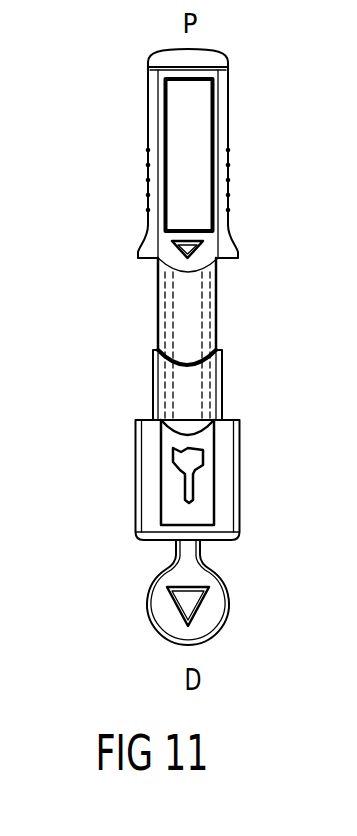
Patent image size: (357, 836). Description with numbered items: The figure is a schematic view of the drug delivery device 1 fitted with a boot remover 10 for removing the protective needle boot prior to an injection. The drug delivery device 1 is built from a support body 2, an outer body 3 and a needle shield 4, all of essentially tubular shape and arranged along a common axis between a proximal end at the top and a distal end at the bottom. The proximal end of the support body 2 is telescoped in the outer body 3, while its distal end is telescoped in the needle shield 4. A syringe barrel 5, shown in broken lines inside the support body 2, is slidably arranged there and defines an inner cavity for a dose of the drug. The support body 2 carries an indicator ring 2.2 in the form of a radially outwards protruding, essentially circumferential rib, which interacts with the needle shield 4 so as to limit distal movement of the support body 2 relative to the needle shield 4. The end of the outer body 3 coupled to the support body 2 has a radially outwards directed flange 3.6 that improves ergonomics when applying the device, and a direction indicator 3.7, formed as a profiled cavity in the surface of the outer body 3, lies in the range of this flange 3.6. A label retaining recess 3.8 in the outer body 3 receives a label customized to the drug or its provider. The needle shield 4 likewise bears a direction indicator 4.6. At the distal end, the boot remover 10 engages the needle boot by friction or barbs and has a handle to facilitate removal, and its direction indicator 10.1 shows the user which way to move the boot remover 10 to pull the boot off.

The drug delivery device 1 is at (290, 49).
The support body 2 is at (158, 300).
The indicator ring 2.2 is at (153, 352).
The outer body 3 is at (148, 103).
The flange 3.6 is at (140, 253).
The direction indicator 3.7 is at (203, 245).
The label retaining recess 3.8 is at (194, 165).
The needle shield 4 is at (240, 447).
The direction indicator 4.6 is at (178, 458).
The syringe barrel 5 is at (202, 333).
The boot remover 10 is at (160, 610).
The direction indicator 10.1 is at (197, 597).